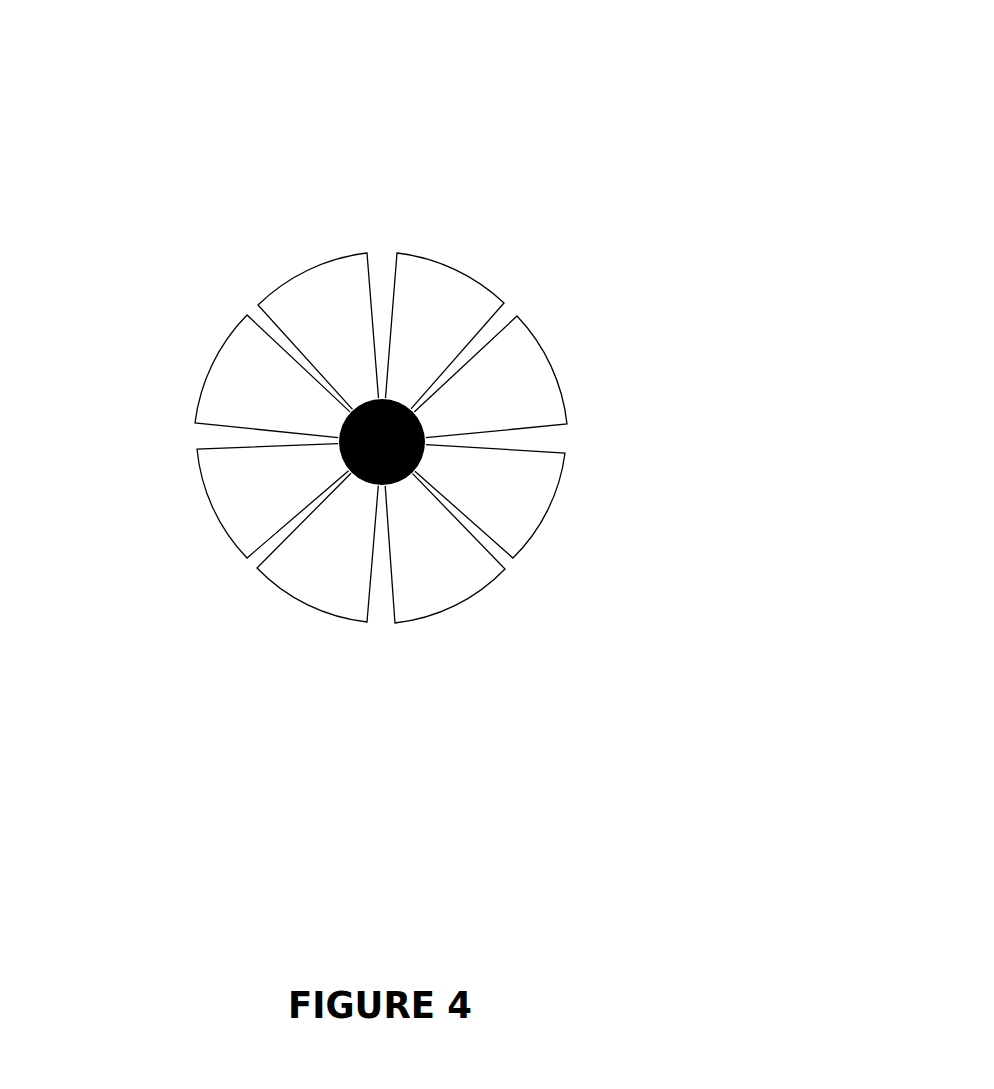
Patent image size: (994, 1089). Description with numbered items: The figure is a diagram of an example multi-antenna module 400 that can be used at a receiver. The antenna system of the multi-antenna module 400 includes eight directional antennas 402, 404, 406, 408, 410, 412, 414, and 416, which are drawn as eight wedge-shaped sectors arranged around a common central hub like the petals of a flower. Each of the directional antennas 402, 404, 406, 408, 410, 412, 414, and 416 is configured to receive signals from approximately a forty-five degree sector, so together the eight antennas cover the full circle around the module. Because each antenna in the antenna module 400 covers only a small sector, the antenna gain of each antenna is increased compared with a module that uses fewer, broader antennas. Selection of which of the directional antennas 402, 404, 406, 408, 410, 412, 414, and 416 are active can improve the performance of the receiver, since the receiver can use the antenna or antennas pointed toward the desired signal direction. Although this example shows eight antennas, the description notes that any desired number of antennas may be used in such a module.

The multi-antenna module 400 is at (660, 196).
The directional antenna 402 is at (445, 257).
The directional antenna 404 is at (316, 258).
The directional antenna 406 is at (198, 368).
The directional antenna 408 is at (203, 508).
The directional antenna 410 is at (307, 615).
The directional antenna 412 is at (455, 615).
The directional antenna 414 is at (553, 522).
The directional antenna 416 is at (558, 367).